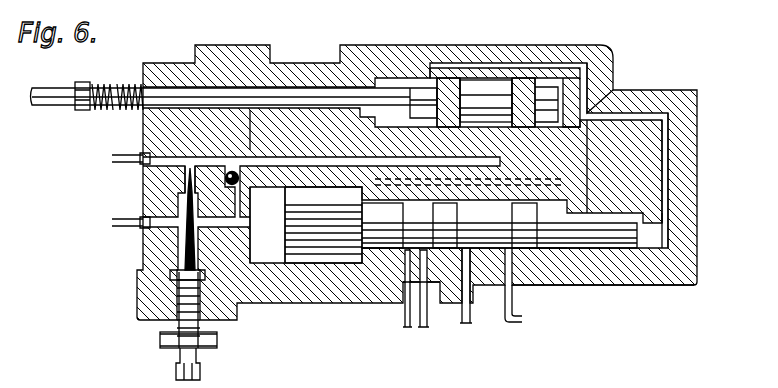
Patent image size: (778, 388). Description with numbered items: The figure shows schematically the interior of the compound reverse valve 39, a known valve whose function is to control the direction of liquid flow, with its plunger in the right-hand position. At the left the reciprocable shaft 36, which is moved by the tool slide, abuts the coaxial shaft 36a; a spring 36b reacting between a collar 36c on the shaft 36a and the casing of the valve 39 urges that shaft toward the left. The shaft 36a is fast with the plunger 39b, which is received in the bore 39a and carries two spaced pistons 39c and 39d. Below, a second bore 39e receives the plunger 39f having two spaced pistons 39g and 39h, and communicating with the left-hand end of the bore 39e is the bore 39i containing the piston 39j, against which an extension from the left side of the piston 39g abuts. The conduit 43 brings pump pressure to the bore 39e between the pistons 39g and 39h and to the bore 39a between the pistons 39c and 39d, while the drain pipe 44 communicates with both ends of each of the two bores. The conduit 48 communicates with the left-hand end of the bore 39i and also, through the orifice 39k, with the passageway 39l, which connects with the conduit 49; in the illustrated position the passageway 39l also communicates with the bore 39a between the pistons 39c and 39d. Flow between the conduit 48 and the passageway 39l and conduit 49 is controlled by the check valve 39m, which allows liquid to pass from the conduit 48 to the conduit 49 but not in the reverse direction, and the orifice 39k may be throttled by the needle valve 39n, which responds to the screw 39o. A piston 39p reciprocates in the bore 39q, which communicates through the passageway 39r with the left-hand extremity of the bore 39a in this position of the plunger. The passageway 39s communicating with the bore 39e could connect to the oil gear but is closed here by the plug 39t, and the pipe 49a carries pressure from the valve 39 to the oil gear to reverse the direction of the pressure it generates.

The reciprocable shaft 36 is at (42, 107).
The shaft 36a is at (127, 86).
The spring 36b is at (112, 110).
The collar 36c is at (80, 112).
The compound reverse valve 39 is at (366, 58).
The bore 39a is at (486, 83).
The plunger 39b is at (478, 85).
The piston 39c is at (440, 80).
The piston 39d is at (522, 83).
The bore 39e is at (488, 256).
The plunger 39f is at (603, 285).
The piston 39g is at (407, 253).
The piston 39h is at (535, 252).
The bore 39i is at (273, 262).
The piston 39j is at (320, 250).
The orifice 39k is at (188, 167).
The passageway 39l is at (283, 155).
The check valve 39m is at (228, 172).
The needle valve 39n is at (192, 247).
The screw 39o is at (160, 348).
The piston 39p is at (660, 262).
The bore 39q is at (680, 240).
The passageway 39r is at (592, 77).
The passageway 39s is at (420, 283).
The plug 39t is at (424, 328).
The conduit 43 is at (466, 325).
The drain pipe 44 is at (406, 328).
The conduit 48 is at (112, 222).
The conduit 49 is at (118, 158).
The pipe 49a is at (516, 322).